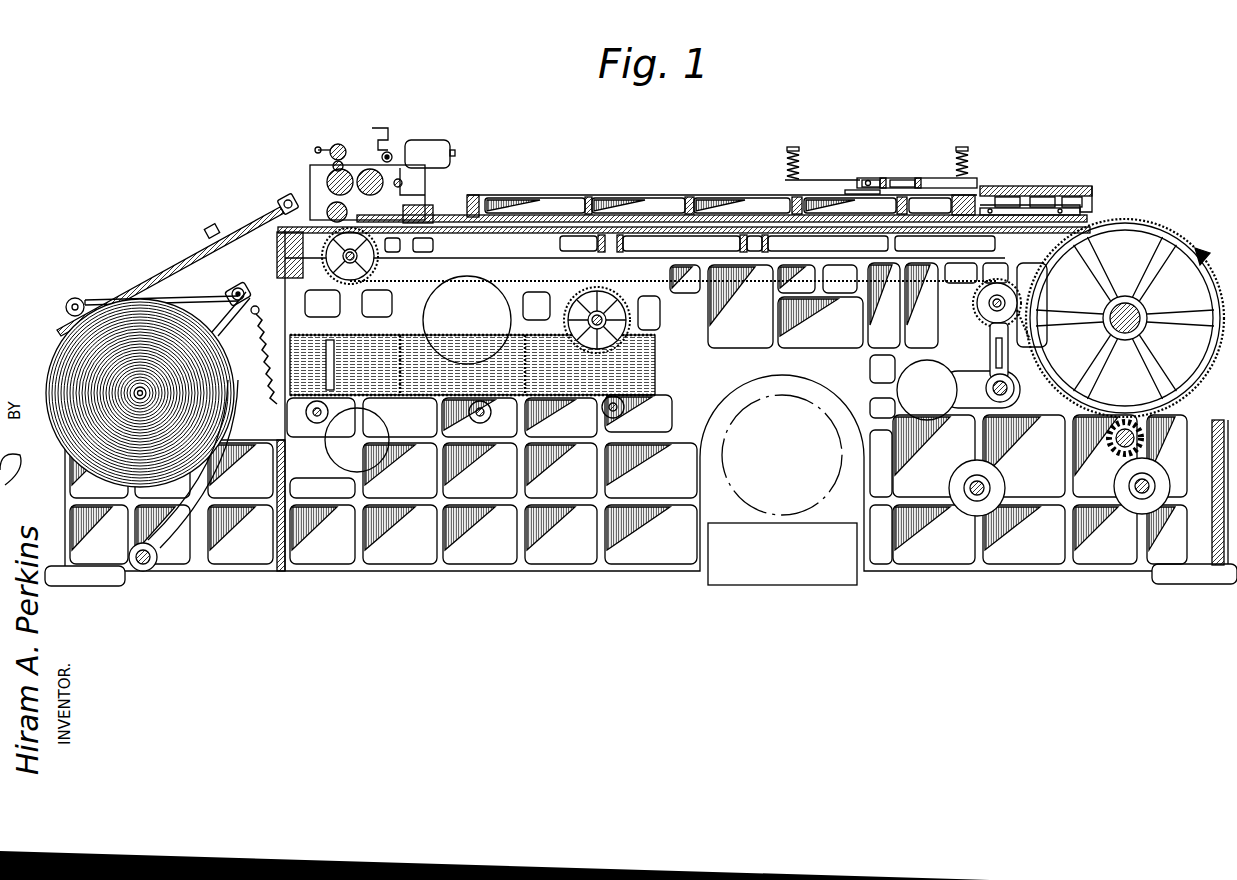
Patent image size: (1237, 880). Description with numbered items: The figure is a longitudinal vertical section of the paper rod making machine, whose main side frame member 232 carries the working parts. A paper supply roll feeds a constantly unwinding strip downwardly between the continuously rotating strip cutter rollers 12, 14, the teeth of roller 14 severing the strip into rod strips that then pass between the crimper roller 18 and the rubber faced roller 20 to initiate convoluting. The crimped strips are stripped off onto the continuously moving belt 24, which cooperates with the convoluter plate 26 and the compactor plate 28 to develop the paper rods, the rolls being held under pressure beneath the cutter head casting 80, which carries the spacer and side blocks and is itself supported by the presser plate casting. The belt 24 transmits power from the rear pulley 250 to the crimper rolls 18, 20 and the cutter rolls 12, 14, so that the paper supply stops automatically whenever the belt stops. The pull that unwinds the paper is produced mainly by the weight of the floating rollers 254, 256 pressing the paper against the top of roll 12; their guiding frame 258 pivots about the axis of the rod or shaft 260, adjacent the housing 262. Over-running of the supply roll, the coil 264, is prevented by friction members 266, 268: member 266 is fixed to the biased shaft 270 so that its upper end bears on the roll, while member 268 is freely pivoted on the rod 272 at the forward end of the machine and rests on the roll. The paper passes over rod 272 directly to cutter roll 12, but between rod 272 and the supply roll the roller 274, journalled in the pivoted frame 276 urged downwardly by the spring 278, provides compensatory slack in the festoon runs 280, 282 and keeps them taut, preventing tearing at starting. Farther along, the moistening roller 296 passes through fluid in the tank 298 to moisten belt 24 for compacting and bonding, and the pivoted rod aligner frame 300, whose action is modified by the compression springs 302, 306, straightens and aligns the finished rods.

The strip cutter roller 12 is at (330, 182).
The strip cutter roller 14 is at (368, 180).
The crimper roller 18 is at (410, 185).
The rubber faced roller 20 is at (327, 210).
The belt 24 is at (760, 284).
The convoluter plate 26 is at (415, 225).
The compactor plate 28 is at (530, 208).
The cutter head casting 80 is at (1030, 190).
The main side frame member 232 is at (520, 575).
The rear pulley 250 is at (1100, 265).
The floating roller 254 is at (332, 150).
The floating roller 256 is at (345, 168).
The guiding frame 258 is at (378, 140).
The rod or shaft 260 is at (392, 158).
The housing 262 is at (450, 148).
The coil of material 264 is at (50, 375).
The friction member 266 is at (178, 538).
The friction member 268 is at (132, 315).
The shaft 270 is at (143, 571).
The rod or shaft 272 is at (283, 200).
The roller 274 is at (235, 295).
The pivoted frame 276 is at (216, 326).
The spring 278 is at (262, 360).
The run 280 is at (187, 300).
The run 282 is at (267, 242).
The roller 296 is at (585, 352).
The tank 298 is at (430, 370).
The rod aligner frame 300 is at (945, 178).
The compression spring 302 is at (788, 160).
The compression spring 306 is at (965, 158).